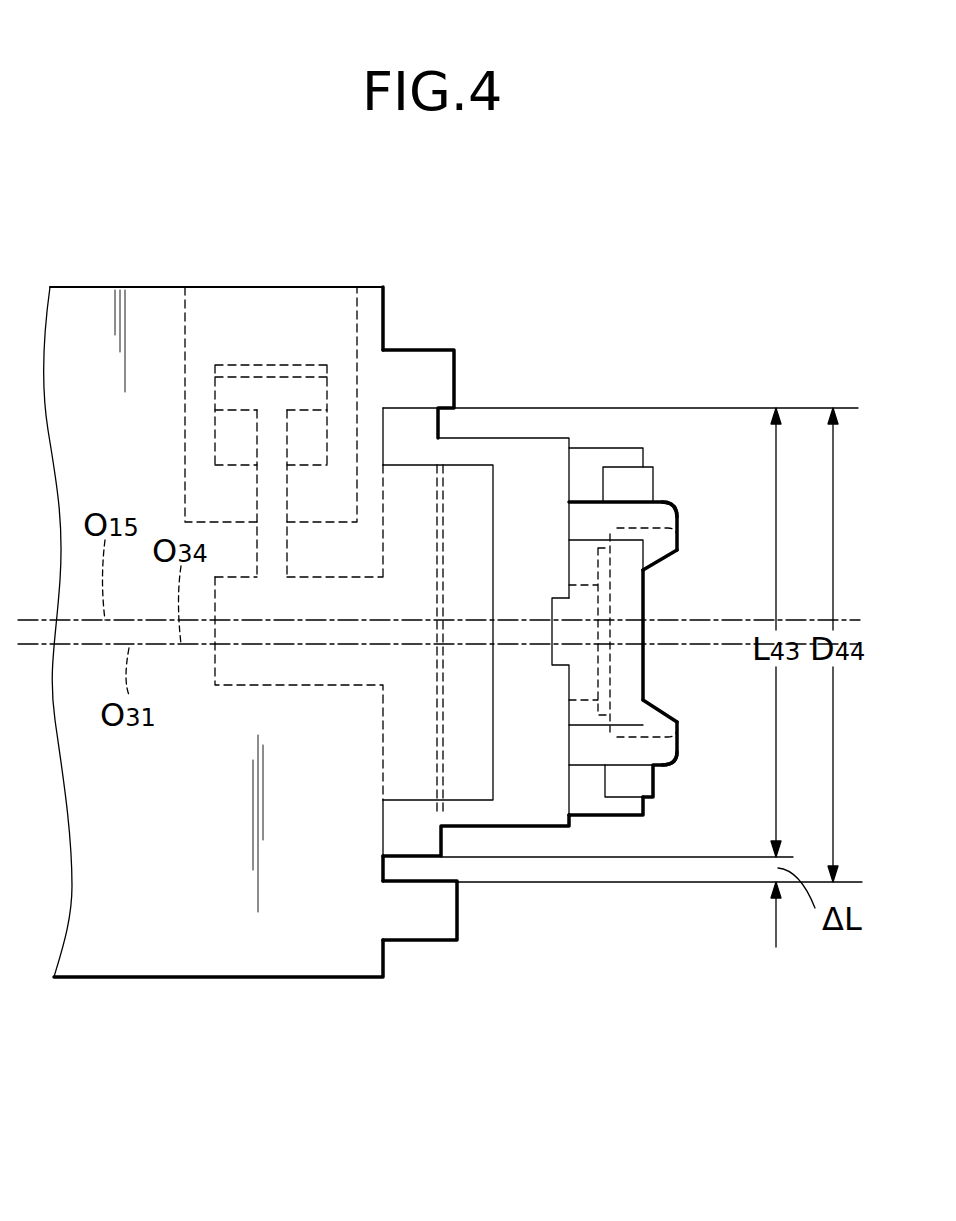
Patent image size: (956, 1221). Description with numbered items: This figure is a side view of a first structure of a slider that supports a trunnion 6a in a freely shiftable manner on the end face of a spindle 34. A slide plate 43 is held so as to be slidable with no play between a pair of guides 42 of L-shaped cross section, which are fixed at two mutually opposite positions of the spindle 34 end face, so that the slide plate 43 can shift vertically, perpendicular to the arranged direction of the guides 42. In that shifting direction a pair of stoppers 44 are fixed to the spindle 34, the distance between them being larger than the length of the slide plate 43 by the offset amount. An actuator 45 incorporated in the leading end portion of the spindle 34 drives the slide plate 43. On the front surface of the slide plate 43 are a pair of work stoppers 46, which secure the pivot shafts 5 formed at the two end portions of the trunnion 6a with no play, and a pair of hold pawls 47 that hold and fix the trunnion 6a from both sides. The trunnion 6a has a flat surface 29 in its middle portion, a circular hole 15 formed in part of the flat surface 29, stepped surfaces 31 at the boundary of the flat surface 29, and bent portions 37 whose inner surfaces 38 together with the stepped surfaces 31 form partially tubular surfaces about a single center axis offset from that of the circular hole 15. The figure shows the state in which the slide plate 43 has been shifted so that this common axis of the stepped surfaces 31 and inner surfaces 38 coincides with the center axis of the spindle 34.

The spindle 34 is at (302, 945).
The actuator 45 is at (272, 300).
The stopper 44 is at (425, 370).
The guide 42 is at (480, 475).
The slide plate 43 is at (430, 836).
The work stopper 46 is at (586, 460).
The hold pawl 47 is at (580, 686).
The pivot shaft 5 is at (629, 480).
The trunnion 6a is at (665, 540).
The bent portion 37 is at (655, 512).
The inner surface 38 is at (648, 553).
The stepped surface 31 is at (652, 572).
The circular hole 15 is at (600, 648).
The flat surface 29 is at (625, 680).